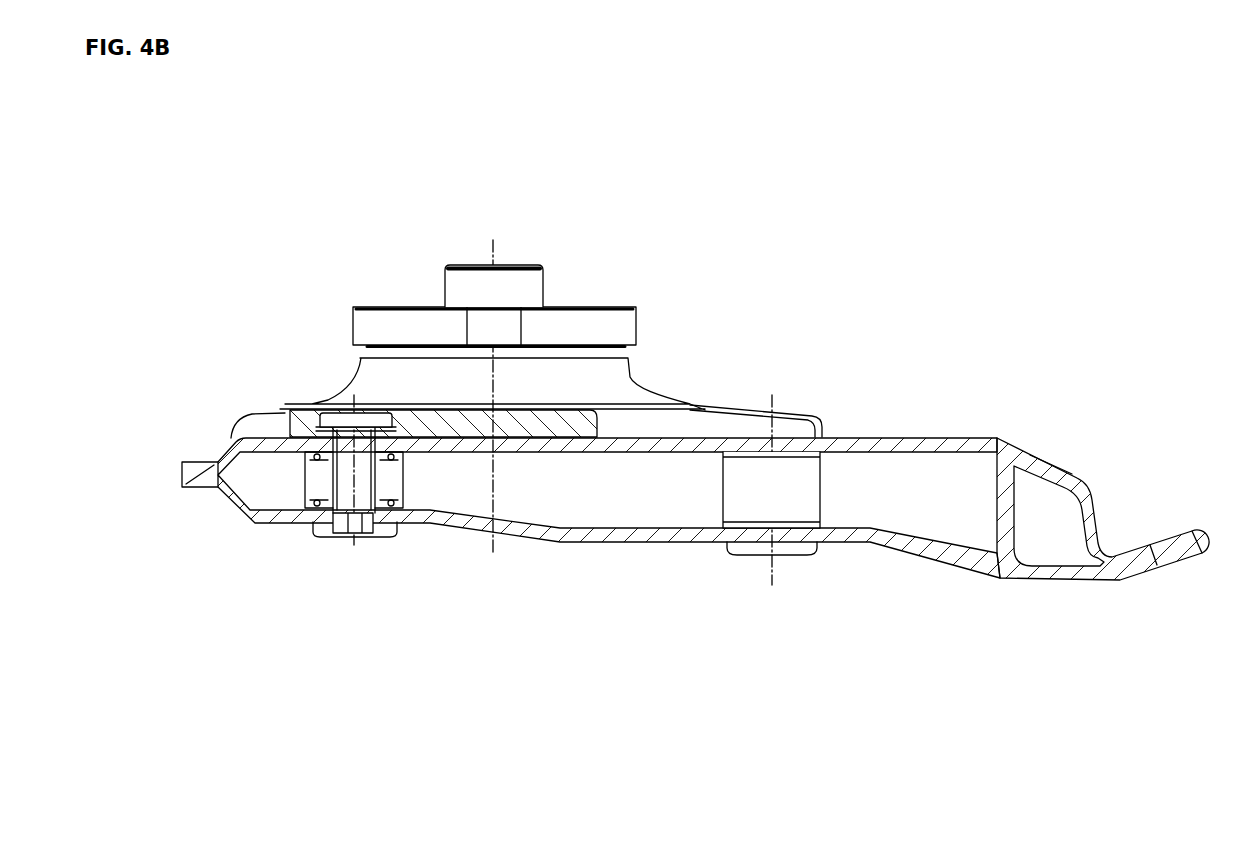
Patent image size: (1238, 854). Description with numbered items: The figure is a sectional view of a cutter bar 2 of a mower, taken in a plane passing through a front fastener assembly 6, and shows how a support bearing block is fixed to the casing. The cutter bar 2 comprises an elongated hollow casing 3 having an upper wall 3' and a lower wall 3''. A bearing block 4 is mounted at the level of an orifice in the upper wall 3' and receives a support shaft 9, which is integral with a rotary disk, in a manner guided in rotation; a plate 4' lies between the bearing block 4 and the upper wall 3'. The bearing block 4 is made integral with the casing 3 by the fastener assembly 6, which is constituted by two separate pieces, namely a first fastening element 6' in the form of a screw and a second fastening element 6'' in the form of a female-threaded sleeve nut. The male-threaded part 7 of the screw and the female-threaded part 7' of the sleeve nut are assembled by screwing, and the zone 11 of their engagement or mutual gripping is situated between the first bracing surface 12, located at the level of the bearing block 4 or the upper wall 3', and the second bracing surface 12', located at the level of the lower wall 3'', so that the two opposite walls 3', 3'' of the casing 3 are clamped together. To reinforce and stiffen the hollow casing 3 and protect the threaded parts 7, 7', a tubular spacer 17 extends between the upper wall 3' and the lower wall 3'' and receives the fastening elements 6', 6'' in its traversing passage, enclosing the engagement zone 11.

The cutter bar 2 is at (690, 471).
The elongated hollow casing 3 is at (695, 460).
The upper wall 3' is at (713, 479).
The lower wall 3'' is at (609, 547).
The bearing block 4 is at (551, 385).
The bearing plate / flange 4' is at (443, 321).
The fastener assembly 6 is at (508, 482).
The first fastening element 6' is at (313, 395).
The second fastening element 6'' is at (342, 593).
The male-threaded part 7 is at (317, 497).
The female-threaded part 7' is at (312, 523).
The support shaft 9 is at (527, 288).
The zone of engagement 11 is at (322, 487).
The first bracing surface 12 is at (327, 360).
The second bracing surface 12' is at (337, 568).
The tubular spacer 17 is at (404, 512).